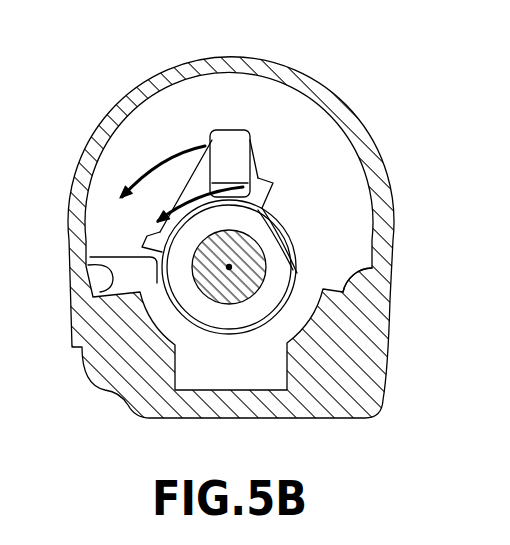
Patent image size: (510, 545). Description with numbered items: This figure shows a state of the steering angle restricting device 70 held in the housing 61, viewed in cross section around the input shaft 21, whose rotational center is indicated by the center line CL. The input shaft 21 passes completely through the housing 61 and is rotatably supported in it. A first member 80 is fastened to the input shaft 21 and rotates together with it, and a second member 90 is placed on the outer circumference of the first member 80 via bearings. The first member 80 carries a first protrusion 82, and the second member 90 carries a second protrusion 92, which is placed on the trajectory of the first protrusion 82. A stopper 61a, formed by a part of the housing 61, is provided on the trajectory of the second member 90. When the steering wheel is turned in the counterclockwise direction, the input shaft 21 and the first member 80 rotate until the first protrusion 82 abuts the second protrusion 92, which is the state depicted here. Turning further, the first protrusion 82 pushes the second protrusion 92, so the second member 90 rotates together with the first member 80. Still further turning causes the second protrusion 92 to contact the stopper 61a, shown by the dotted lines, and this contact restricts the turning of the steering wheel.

The housing 61 is at (100, 124).
The stopper 61a is at (86, 266).
The steering angle restricting device 70 is at (185, 110).
The first member 80 is at (297, 247).
The input shaft 21 is at (229, 269).
The center line CL is at (229, 267).
The second member 90 is at (258, 157).
The second protrusion 92 is at (229, 152).
The first protrusion 82 is at (258, 195).